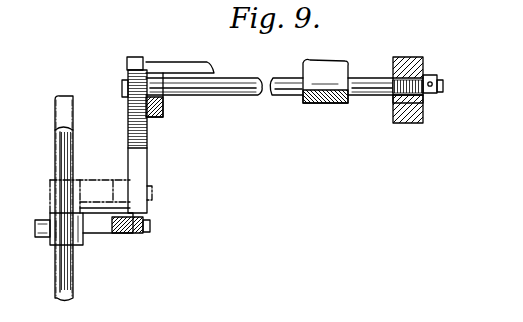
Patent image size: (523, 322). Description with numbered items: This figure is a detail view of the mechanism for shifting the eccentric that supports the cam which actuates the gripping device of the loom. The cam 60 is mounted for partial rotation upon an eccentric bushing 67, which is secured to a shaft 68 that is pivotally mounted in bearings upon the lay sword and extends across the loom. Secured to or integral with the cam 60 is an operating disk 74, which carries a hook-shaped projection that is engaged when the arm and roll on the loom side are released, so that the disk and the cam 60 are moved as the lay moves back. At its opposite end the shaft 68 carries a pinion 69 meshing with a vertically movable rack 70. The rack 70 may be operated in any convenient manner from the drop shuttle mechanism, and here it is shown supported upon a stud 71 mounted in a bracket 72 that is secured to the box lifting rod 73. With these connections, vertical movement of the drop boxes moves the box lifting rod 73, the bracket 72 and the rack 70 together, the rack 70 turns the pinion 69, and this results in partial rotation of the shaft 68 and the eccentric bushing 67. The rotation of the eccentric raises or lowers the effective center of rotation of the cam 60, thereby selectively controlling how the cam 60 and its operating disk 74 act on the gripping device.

The cam 60 is at (398, 124).
The eccentric bushing 67 is at (421, 98).
The shaft 68 is at (123, 88).
The pinion 69 is at (128, 73).
The rack 70 is at (147, 126).
The stud 71 is at (155, 223).
The bracket 72 is at (95, 231).
The box lifting rod 73 is at (75, 260).
The operating disk 74 is at (419, 124).